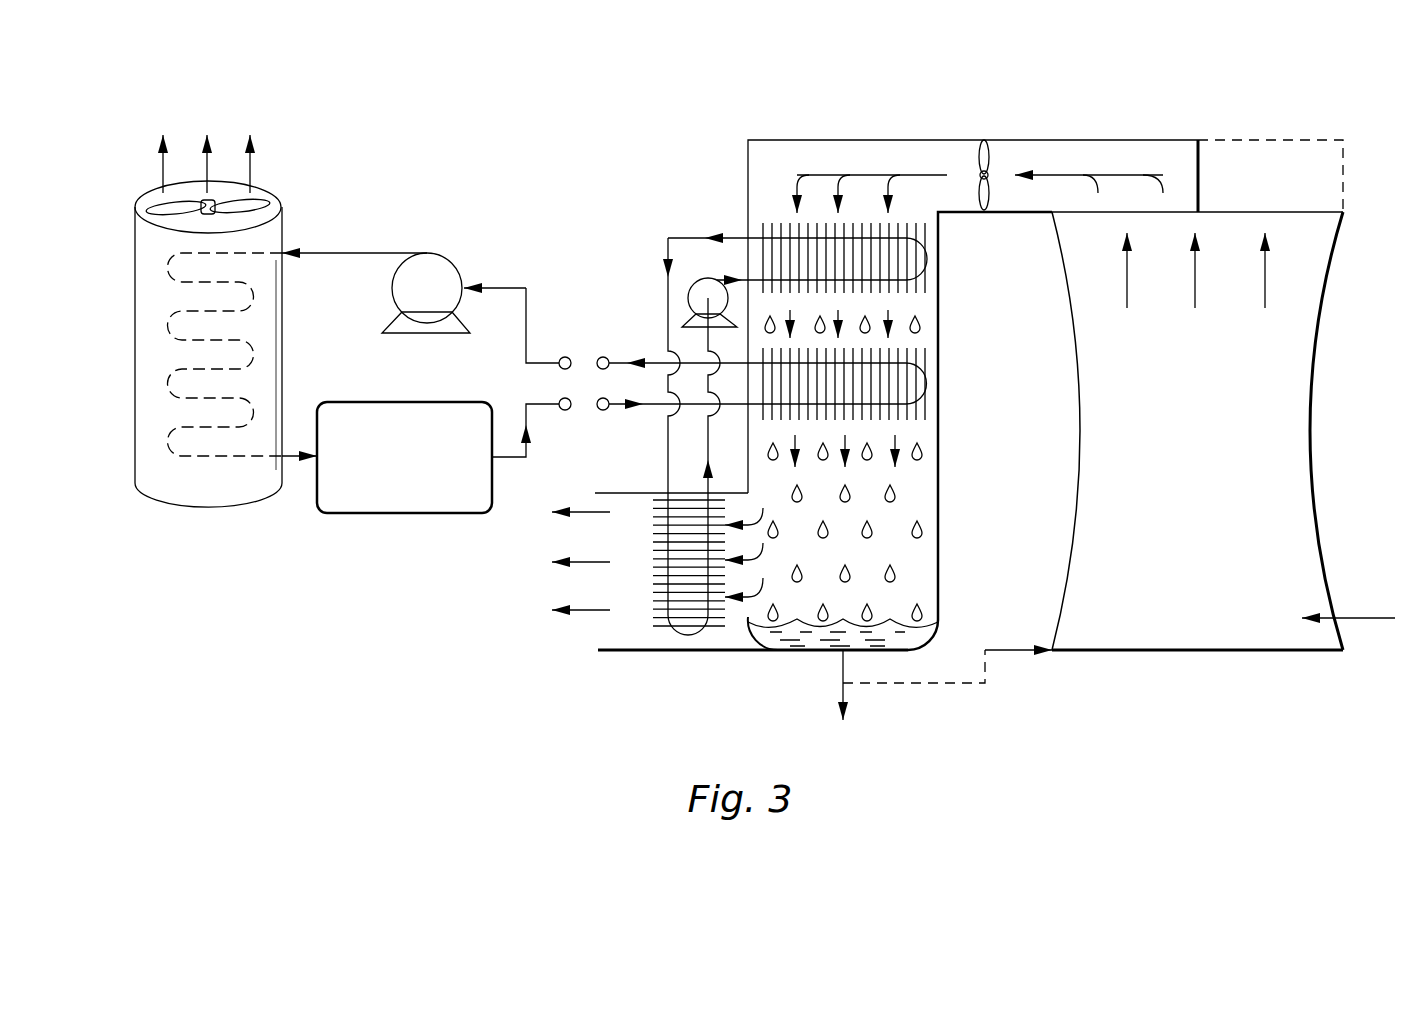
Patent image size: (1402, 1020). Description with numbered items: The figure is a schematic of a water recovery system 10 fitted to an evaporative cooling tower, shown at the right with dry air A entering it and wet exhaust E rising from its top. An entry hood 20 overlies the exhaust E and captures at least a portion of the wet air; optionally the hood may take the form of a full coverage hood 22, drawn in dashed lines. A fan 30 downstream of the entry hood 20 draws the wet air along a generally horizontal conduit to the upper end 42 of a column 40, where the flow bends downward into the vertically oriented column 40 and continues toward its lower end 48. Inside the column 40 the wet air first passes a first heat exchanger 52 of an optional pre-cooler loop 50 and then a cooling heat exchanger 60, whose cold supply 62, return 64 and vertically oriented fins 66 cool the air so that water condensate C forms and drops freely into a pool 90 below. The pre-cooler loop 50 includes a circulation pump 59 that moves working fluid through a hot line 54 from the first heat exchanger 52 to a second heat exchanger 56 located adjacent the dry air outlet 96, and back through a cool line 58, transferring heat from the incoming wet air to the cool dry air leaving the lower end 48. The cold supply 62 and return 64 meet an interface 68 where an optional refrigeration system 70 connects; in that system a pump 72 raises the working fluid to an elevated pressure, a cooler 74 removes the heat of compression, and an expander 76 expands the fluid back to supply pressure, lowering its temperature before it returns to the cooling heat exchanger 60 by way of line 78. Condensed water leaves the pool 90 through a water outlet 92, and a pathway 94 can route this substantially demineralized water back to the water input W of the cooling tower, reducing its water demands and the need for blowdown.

The water recovery system 10 is at (567, 738).
The entry hood 20 is at (1140, 158).
The full coverage hood 22 is at (1263, 133).
The fan 30 is at (990, 152).
The column 40 is at (938, 467).
The upper end 42 is at (748, 178).
The lower end 48 is at (938, 608).
The pre-cooler loop 50 is at (652, 253).
The first heat exchanger 52 is at (938, 283).
The hot line 54 is at (668, 318).
The second heat exchanger 56 is at (682, 628).
The cool line 58 is at (708, 437).
The circulation pump 59 is at (688, 298).
The cooling heat exchanger 60 is at (930, 393).
The cold supply 62 is at (657, 407).
The return 64 is at (653, 362).
The fins 66 is at (938, 358).
The interface 68 is at (572, 396).
The refrigeration system 70 is at (287, 167).
The pump 72 is at (445, 278).
The cooler 74 is at (273, 340).
The expander 76 is at (407, 513).
The conduit 78 is at (543, 407).
The pool 90 is at (818, 638).
The water outlet 92 is at (840, 690).
The pathway 94 is at (912, 685).
The dry air outlet 96 is at (598, 650).
The water condensate C is at (918, 315).
The exhaust E is at (1265, 287).
The water input W is at (1005, 650).
The dry air A is at (1358, 618).